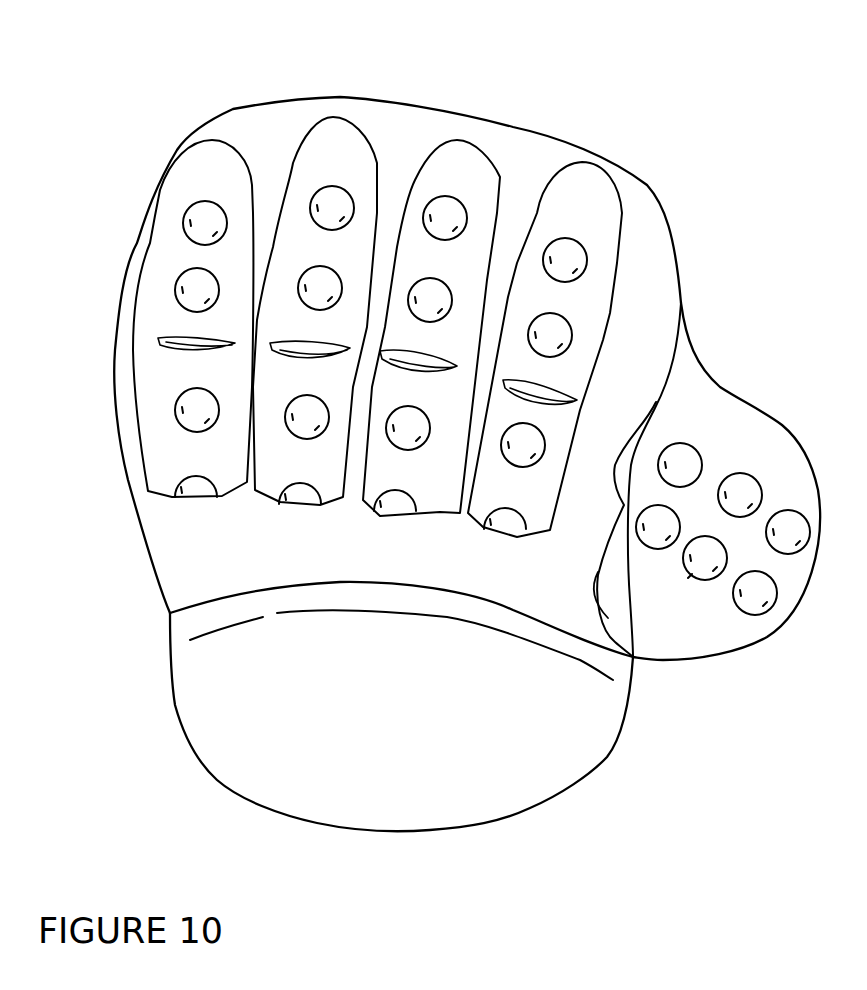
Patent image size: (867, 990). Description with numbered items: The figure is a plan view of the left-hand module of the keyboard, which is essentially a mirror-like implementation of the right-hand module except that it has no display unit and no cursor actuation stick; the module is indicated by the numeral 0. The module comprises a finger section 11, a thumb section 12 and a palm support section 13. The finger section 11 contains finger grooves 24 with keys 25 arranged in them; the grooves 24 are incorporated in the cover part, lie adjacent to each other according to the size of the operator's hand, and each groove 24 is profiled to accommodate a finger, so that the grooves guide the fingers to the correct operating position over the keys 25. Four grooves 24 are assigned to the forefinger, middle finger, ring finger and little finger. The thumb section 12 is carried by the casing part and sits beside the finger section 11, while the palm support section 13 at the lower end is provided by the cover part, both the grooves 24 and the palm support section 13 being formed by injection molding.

The glove 0 is at (122, 182).
The finger section 11 is at (268, 142).
The thumb section 12 is at (747, 435).
The palm support section 13 is at (250, 678).
The finger grooves 24 is at (358, 123).
The keys 25 is at (462, 203).